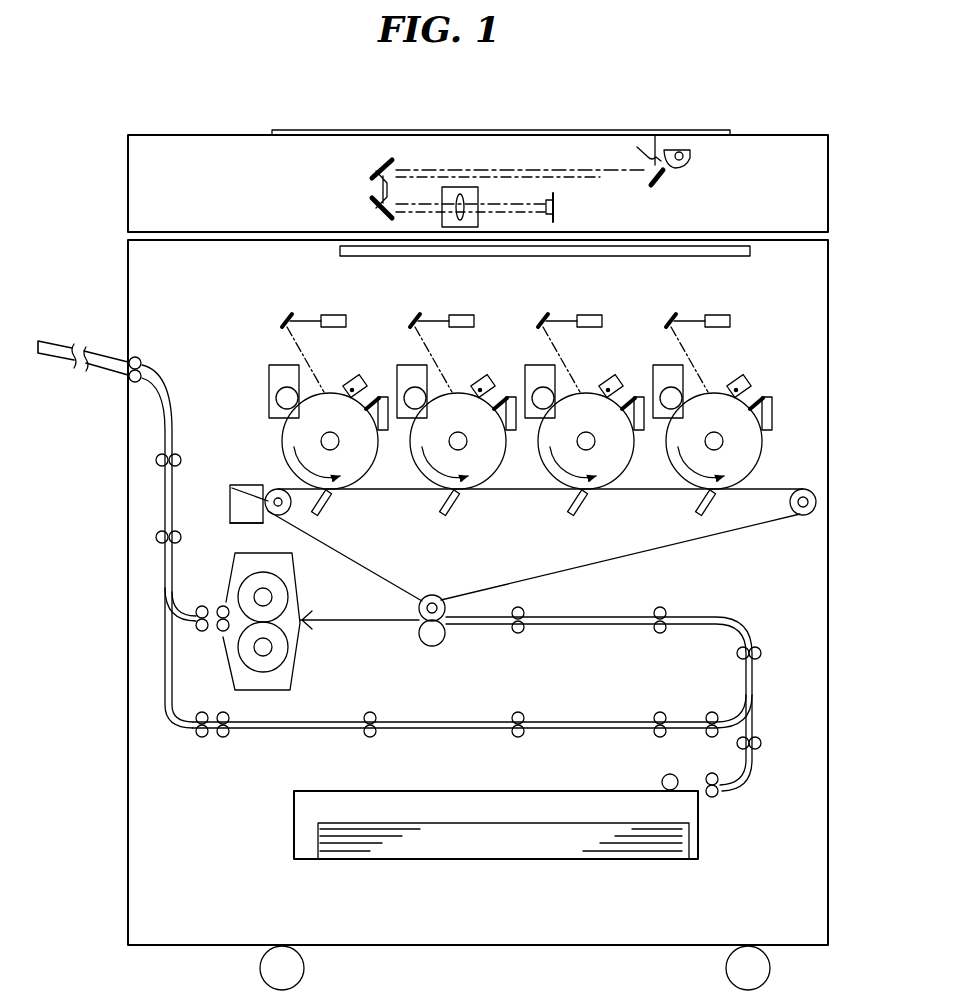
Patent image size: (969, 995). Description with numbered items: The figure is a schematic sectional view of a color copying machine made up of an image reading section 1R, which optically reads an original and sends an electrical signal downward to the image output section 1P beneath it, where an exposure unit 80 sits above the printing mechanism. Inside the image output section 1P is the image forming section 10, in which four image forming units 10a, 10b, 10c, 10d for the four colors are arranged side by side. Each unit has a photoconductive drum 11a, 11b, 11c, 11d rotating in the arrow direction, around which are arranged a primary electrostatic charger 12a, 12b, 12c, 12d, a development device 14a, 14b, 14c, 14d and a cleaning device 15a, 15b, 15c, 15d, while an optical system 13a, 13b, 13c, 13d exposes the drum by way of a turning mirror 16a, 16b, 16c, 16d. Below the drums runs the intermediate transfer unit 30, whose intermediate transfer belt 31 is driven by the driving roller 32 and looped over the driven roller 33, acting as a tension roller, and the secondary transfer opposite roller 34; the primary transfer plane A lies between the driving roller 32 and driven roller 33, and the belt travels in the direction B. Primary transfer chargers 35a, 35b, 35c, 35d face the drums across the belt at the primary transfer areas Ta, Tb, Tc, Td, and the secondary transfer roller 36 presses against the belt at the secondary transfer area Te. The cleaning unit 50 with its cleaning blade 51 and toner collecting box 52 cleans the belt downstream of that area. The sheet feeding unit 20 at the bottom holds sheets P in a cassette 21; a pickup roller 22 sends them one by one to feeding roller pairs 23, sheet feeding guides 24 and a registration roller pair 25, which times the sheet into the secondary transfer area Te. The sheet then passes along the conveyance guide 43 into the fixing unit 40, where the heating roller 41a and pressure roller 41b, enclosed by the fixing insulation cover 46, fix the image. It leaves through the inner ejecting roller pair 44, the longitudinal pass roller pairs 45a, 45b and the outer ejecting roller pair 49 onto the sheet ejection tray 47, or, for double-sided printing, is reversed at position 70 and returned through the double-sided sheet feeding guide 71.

The image reading section 1R is at (122, 190).
The image output section 1P is at (124, 312).
The exposure/laser scanner unit 80 is at (342, 250).
The image forming section 10 is at (752, 330).
The image forming unit 10a is at (690, 313).
The image forming unit 10b is at (562, 313).
The image forming unit 10c is at (434, 313).
The image forming unit 10d is at (306, 313).
The photoconductive drum 11a is at (714, 441).
The photoconductive drum 11b is at (586, 441).
The photoconductive drum 11c is at (458, 441).
The photoconductive drum 11d is at (330, 441).
The primary electrostatic charger 12a is at (726, 376).
The primary electrostatic charger 12b is at (598, 376).
The primary electrostatic charger 12c is at (470, 376).
The primary electrostatic charger 12d is at (342, 376).
The optical system 13a is at (710, 315).
The optical system 13b is at (582, 315).
The optical system 13c is at (454, 315).
The optical system 13d is at (326, 315).
The development device 14a is at (659, 420).
The development device 14b is at (531, 420).
The development device 14c is at (403, 420).
The development device 14d is at (270, 398).
The cleaning device 15a is at (764, 396).
The cleaning device 15b is at (636, 396).
The cleaning device 15c is at (508, 396).
The cleaning device 15d is at (380, 396).
The turning mirror 16a is at (666, 320).
The turning mirror 16b is at (538, 320).
The turning mirror 16c is at (410, 320).
The turning mirror 16d is at (282, 320).
The sheet feeding unit 20 is at (732, 802).
The cassette 21 is at (520, 790).
The pickup roller 22 is at (662, 777).
The feeding roller pairs 23 is at (660, 634).
The sheet feeding guides 24 is at (585, 627).
The registration roller pair 25 is at (519, 634).
The intermediate transfer unit 30 is at (732, 548).
The intermediate transfer belt 31 is at (655, 558).
The driving roller 32 is at (790, 505).
The driven roller 33 is at (275, 488).
The secondary transfer opposite roller 34 is at (446, 600).
The primary transfer charger 35a is at (700, 516).
The primary transfer charger 35b is at (580, 517).
The primary transfer charger 35c is at (450, 517).
The primary transfer charger 35d is at (340, 515).
The secondary transfer roller 36 is at (440, 645).
The fixing unit 40 is at (302, 678).
The heating roller 41a is at (290, 592).
The pressure roller 41b is at (270, 672).
The conveyance guide 43 is at (346, 622).
The inner ejecting roller pair 44 is at (222, 632).
The longitudinal pass roller pair 45a is at (176, 543).
The longitudinal pass roller pair 45b is at (176, 455).
The fixing insulation cover 46 is at (300, 565).
The sheet ejection tray 47 is at (110, 376).
The outer ejecting roller pair 49 is at (141, 358).
The cleaning unit 50 is at (243, 485).
The cleaning blade 51 is at (232, 500).
The toner collecting box 52 is at (240, 524).
The position on the conveyance path 70 is at (163, 565).
The double-sided sheet feeding guide 71 is at (436, 730).
The primary transfer plane A is at (640, 492).
The belt conveying direction B is at (342, 556).
The sheet P is at (360, 822).
The primary transfer area Ta is at (698, 500).
The primary transfer area Tb is at (570, 508).
The primary transfer area Tc is at (442, 508).
The primary transfer area Td is at (344, 506).
The secondary transfer area Te is at (421, 637).